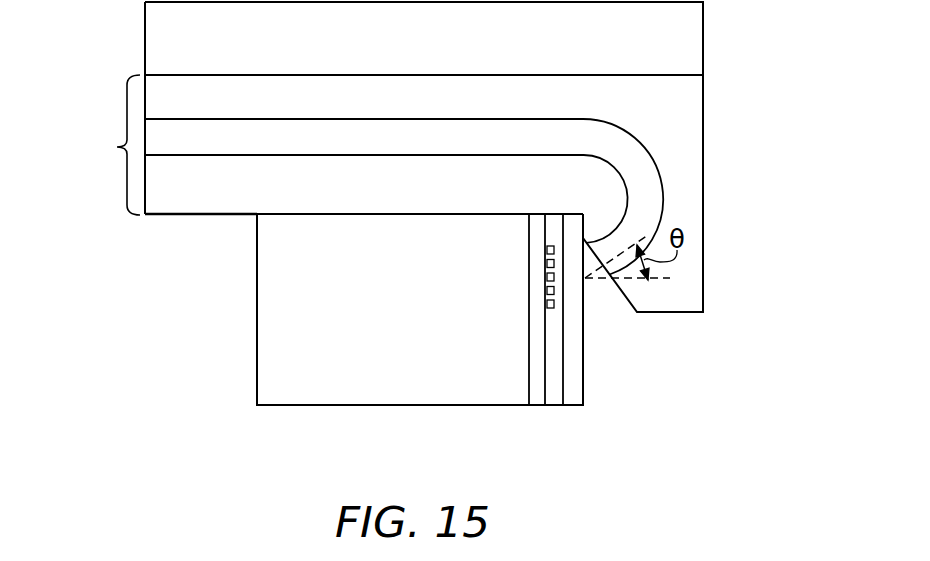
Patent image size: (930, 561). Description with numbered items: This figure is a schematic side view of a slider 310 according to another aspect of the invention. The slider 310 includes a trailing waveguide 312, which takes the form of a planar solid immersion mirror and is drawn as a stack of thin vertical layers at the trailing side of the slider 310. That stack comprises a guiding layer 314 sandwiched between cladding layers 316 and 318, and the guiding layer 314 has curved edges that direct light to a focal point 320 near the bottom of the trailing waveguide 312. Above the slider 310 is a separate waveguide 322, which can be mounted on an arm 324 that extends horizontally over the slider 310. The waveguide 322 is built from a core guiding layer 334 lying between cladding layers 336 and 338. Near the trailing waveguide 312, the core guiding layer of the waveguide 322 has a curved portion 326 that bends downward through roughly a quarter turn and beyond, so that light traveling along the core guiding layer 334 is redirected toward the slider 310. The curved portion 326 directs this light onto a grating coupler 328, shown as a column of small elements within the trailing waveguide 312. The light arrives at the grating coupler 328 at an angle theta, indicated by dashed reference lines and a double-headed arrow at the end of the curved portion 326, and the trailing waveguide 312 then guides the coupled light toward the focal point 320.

The slider 310 is at (280, 358).
The trailing waveguide 312 is at (559, 346).
The guiding layer 314 is at (555, 368).
The cladding layer 316 is at (533, 382).
The cladding layer 318 is at (575, 392).
The focal point 320 is at (549, 405).
The waveguide 322 is at (103, 145).
The arm 324 is at (160, 42).
The curved portion 326 is at (648, 201).
The grating coupler 328 is at (553, 291).
The core guiding layer 334 is at (172, 147).
The cladding layer 336 is at (235, 97).
The cladding layer 338 is at (203, 202).